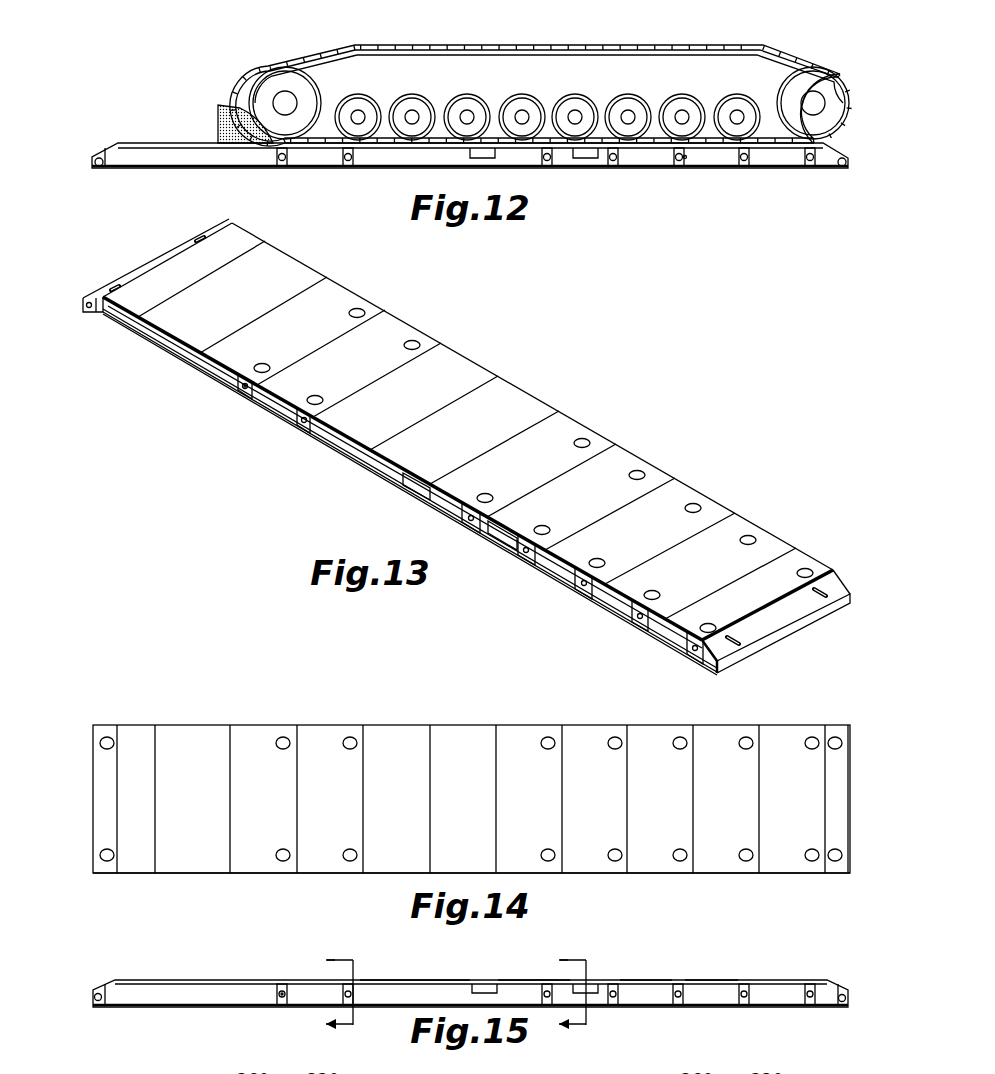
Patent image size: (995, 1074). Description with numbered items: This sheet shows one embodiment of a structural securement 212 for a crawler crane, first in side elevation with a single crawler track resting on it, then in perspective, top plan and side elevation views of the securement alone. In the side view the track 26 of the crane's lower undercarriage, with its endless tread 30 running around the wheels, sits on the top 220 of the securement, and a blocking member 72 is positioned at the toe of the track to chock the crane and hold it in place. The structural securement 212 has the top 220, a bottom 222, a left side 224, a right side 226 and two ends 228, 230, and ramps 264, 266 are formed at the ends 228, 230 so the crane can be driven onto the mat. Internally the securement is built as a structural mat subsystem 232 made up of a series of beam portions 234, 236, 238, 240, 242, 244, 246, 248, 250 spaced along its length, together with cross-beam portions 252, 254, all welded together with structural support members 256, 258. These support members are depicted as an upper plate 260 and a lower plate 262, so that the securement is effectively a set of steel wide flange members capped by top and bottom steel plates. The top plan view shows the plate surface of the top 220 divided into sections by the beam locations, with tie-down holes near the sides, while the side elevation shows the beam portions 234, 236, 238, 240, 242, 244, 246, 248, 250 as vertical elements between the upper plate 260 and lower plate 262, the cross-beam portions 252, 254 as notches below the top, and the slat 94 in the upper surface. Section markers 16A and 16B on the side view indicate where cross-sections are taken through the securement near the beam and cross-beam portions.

In FIG. 12, the track 26 is at (560, 43).
In FIG. 12, the endless tread 30 is at (515, 50).
In FIG. 12, the blocking member 72 is at (217, 125).
In FIG. 15, the slat 94 is at (694, 983).
In FIG. 12, the structural securement 212 is at (588, 174).
In FIG. 13, the structural securement 212 is at (560, 345).
In FIG. 14, the structural securement 212 is at (247, 708).
In FIG. 15, the structural securement 212 is at (247, 966).
In FIG. 13, the top 220 is at (508, 388).
In FIG. 14, the top 220 is at (390, 733).
In FIG. 15, the top 220 is at (755, 983).
In FIG. 13, the bottom 222 is at (553, 582).
In FIG. 13, the left side 224 is at (346, 458).
In FIG. 14, the left side 224 is at (326, 874).
In FIG. 13, the right side 226 is at (622, 447).
In FIG. 14, the right side 226 is at (317, 724).
In FIG. 13, the end 228 is at (795, 637).
In FIG. 14, the end 228 is at (850, 773).
In FIG. 15, the end 228 is at (846, 994).
In FIG. 13, the end 230 is at (203, 245).
In FIG. 14, the end 230 is at (97, 775).
In FIG. 15, the end 230 is at (97, 993).
In FIG. 12, the structural mat subsystem 232 is at (692, 160).
In FIG. 13, the structural mat subsystem 232 is at (256, 400).
In FIG. 15, the structural mat subsystem 232 is at (272, 994).
In FIG. 12, the beam portion 234 is at (843, 168).
In FIG. 13, the beam portion 234 is at (717, 674).
In FIG. 15, the beam portion 234 is at (843, 1008).
In FIG. 12, the beam portion 236 is at (811, 168).
In FIG. 13, the beam portion 236 is at (637, 630).
In FIG. 15, the beam portion 236 is at (810, 1008).
In FIG. 12, the beam portion 238 is at (745, 168).
In FIG. 13, the beam portion 238 is at (690, 660).
In FIG. 15, the beam portion 238 is at (745, 1008).
In FIG. 12, the beam portion 240 is at (680, 168).
In FIG. 13, the beam portion 240 is at (581, 598).
In FIG. 15, the beam portion 240 is at (678, 1008).
In FIG. 12, the beam portion 242 is at (614, 168).
In FIG. 13, the beam portion 242 is at (523, 562).
In FIG. 15, the beam portion 242 is at (614, 1008).
In FIG. 12, the beam portion 244 is at (548, 168).
In FIG. 13, the beam portion 244 is at (468, 530).
In FIG. 15, the beam portion 244 is at (548, 1008).
In FIG. 12, the beam portion 246 is at (349, 168).
In FIG. 13, the beam portion 246 is at (299, 432).
In FIG. 15, the beam portion 246 is at (349, 1008).
In FIG. 12, the beam portion 248 is at (283, 168).
In FIG. 13, the beam portion 248 is at (241, 398).
In FIG. 15, the beam portion 248 is at (283, 1008).
In FIG. 12, the beam portion 250 is at (99, 168).
In FIG. 13, the beam portion 250 is at (86, 313).
In FIG. 15, the beam portion 250 is at (99, 1008).
In FIG. 12, the cross-beam portion 252 is at (585, 147).
In FIG. 13, the cross-beam portion 252 is at (503, 547).
In FIG. 15, the cross-beam portion 252 is at (582, 983).
In FIG. 12, the cross-beam portion 254 is at (488, 147).
In FIG. 13, the cross-beam portion 254 is at (413, 493).
In FIG. 15, the cross-beam portion 254 is at (486, 983).
In FIG. 13, the structural support member 256 is at (718, 528).
In FIG. 14, the structural support member 256 is at (460, 746).
In FIG. 15, the structural support member 256 is at (424, 978).
In FIG. 15, the structural support member 258 is at (210, 1008).
In FIG. 13, the upper plate 260 is at (675, 490).
In FIG. 14, the upper plate 260 is at (587, 736).
In FIG. 15, the upper plate 260 is at (523, 983).
In FIG. 15, the lower plate 262 is at (407, 1008).
In FIG. 13, the ramp 264 is at (833, 585).
In FIG. 13, the ramp 266 is at (125, 286).
In FIG. 15, the section line 16A is at (359, 993).
In FIG. 15, the section line 16B is at (592, 993).